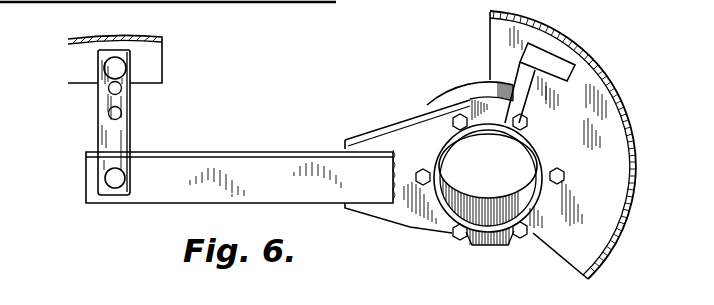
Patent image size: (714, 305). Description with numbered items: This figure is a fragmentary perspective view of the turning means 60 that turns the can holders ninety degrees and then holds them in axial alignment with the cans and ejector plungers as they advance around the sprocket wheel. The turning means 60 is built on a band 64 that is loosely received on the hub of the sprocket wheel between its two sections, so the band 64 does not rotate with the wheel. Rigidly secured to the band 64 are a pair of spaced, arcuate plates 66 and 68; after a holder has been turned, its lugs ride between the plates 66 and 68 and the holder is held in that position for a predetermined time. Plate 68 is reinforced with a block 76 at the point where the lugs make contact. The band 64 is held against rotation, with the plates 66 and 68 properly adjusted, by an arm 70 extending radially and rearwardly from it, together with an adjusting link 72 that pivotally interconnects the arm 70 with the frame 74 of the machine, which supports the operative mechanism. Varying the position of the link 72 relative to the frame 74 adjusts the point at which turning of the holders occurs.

The turning means 60 is at (486, 43).
The band 64 is at (443, 101).
The arcuate plate 66 is at (537, 27).
The arcuate plate 68 is at (575, 256).
The arm 70 is at (242, 167).
The adjusting link 72 is at (120, 141).
The frame 74 is at (82, 70).
The block 76 is at (552, 59).